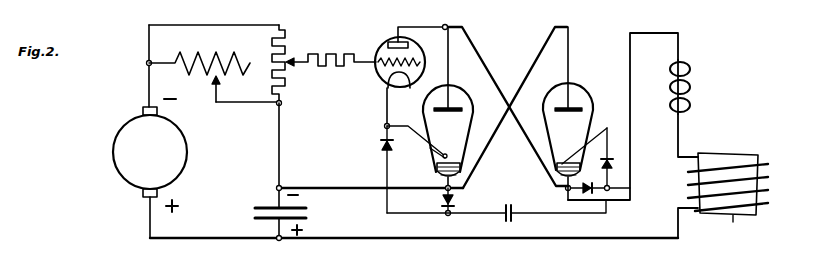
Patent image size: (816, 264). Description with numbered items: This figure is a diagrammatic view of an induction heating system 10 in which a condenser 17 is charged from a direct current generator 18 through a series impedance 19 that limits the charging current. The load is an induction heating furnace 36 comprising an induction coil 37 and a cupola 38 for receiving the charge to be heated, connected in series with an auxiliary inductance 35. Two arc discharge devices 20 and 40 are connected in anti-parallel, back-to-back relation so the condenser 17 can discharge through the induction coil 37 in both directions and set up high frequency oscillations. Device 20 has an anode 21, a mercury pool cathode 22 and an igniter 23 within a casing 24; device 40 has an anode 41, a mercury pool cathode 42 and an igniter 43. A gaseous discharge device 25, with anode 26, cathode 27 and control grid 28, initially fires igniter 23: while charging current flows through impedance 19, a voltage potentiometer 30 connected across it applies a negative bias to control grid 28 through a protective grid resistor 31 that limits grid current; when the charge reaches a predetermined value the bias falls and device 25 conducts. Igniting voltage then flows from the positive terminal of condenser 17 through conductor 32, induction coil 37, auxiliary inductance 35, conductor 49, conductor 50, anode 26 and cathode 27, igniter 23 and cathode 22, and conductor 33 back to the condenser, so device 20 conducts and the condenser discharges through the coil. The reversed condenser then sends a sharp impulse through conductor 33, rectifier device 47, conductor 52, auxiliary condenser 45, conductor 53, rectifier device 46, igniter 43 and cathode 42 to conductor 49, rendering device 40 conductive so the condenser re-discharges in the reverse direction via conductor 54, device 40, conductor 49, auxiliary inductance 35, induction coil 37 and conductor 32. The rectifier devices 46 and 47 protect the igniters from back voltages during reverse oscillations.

The output circuit 10 is at (730, 59).
The condenser 17 is at (258, 206).
The direct current generator 18 is at (114, 170).
The impedance 19 is at (208, 55).
The arc discharge device 20 is at (482, 87).
The anode 21 is at (463, 109).
The mercury pool cathode 22 is at (437, 170).
The igniter 23 is at (434, 152).
The casing 24 is at (424, 120).
The gaseous discharge device 25 is at (382, 35).
The anode 26 is at (408, 40).
The cathode 27 is at (398, 80).
The control grid 28 is at (418, 56).
The voltage potentiometer 30 is at (285, 46).
The protective grid resistor 31 is at (331, 48).
The conductor 32 is at (517, 240).
The conductor 33 is at (347, 188).
The auxiliary inductance 35 is at (691, 82).
The induction heating furnace 36 is at (742, 140).
The induction coil 37 is at (767, 164).
The cupola 38 is at (733, 218).
The arc discharge device 40 is at (602, 84).
The anode 41 is at (582, 107).
The mercury pool cathode 42 is at (558, 167).
The igniter 43 is at (580, 158).
The auxiliary condenser 45 is at (512, 207).
The rectifier device 46 is at (380, 143).
The rectifier device 47 is at (455, 200).
The conductor 49 is at (632, 136).
The conductor 50 is at (480, 60).
The conductor 52 is at (490, 216).
The conductor 53 is at (582, 213).
The conductor 54 is at (537, 52).